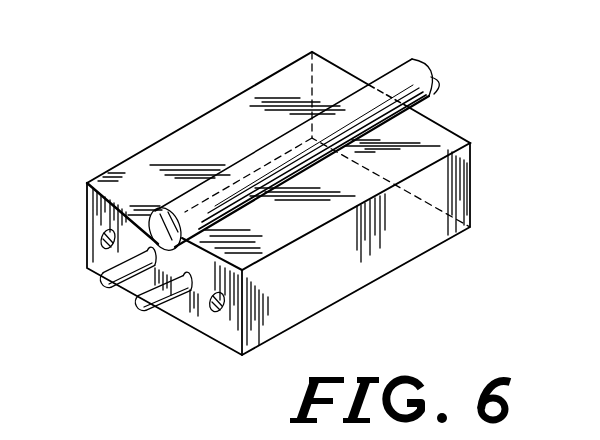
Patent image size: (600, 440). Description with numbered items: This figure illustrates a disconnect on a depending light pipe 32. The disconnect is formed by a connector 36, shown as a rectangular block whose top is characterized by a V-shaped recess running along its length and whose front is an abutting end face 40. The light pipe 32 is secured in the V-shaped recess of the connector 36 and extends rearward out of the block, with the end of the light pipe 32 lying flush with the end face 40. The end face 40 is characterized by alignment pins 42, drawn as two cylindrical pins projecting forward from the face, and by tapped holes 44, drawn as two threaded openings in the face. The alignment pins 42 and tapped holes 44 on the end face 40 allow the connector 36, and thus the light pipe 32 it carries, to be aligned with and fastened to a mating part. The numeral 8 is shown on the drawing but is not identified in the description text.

The groove 8 is at (132, 238).
The light pipe 32 is at (393, 81).
The connector 36 is at (393, 268).
The abutting end face 40 is at (226, 330).
The alignment pins 42 is at (102, 283).
The tapped holes 44 is at (98, 241).